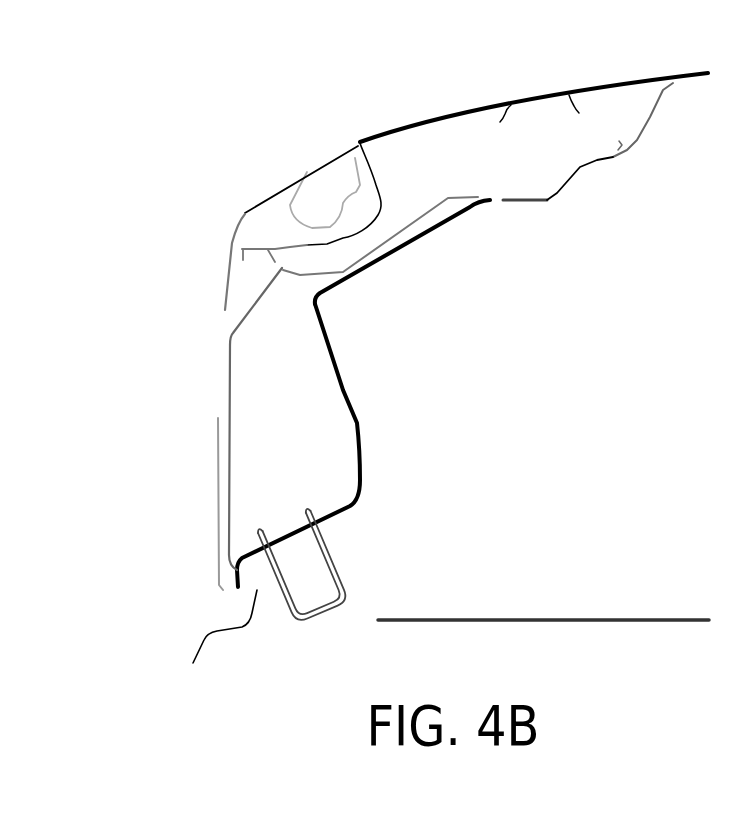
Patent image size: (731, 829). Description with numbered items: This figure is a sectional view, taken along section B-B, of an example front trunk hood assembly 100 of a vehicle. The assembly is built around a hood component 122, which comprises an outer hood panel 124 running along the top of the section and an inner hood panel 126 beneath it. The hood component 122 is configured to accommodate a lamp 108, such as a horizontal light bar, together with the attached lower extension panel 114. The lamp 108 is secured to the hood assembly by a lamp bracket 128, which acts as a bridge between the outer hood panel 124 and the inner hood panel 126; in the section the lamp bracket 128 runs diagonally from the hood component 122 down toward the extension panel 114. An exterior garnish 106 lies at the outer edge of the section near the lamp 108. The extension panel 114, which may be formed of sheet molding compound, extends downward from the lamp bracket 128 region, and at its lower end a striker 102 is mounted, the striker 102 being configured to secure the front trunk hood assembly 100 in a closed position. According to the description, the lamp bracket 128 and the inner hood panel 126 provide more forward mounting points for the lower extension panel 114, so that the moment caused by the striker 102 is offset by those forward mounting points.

The front trunk hood assembly 100 is at (406, 43).
The striker 102 is at (323, 617).
The exterior garnish 106 is at (245, 213).
The lamp 108 is at (327, 166).
The extension panel 114 is at (343, 390).
The hood component 122 is at (673, 83).
The outer hood panel 124 is at (487, 109).
The inner hood panel 126 is at (612, 165).
The lamp bracket 128 is at (306, 245).